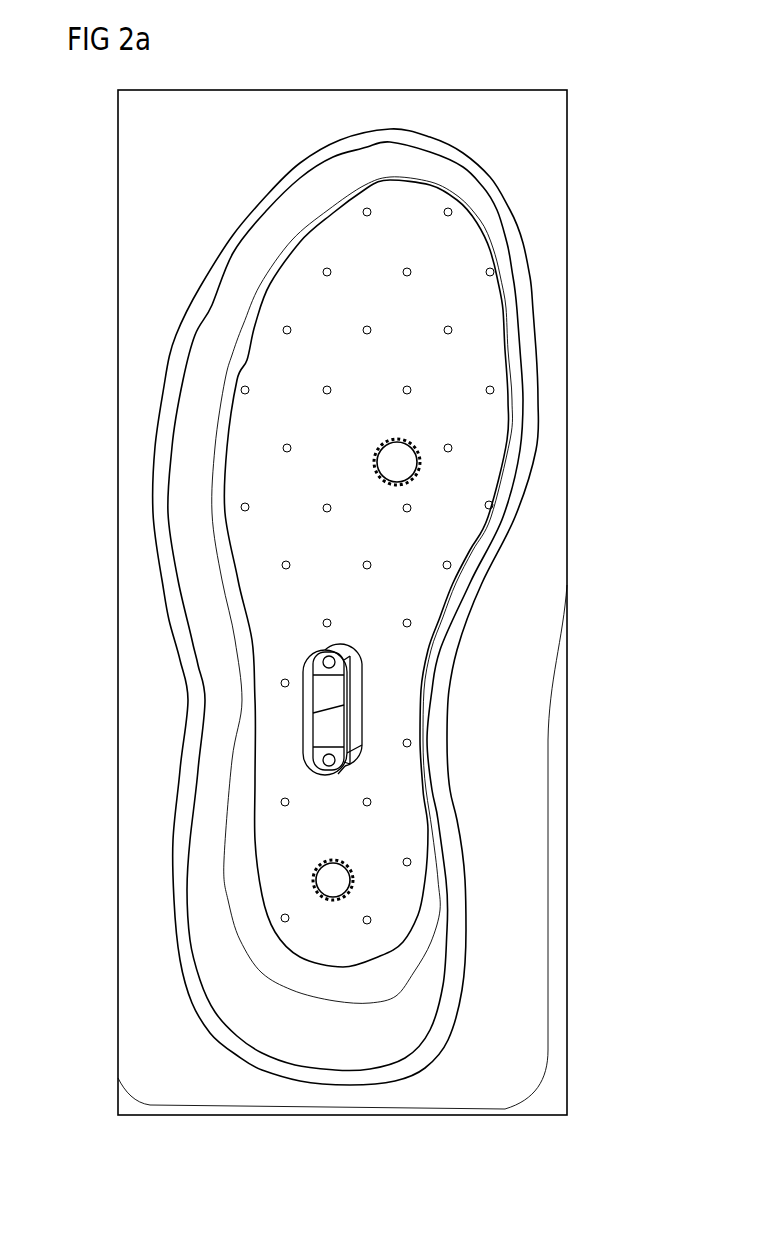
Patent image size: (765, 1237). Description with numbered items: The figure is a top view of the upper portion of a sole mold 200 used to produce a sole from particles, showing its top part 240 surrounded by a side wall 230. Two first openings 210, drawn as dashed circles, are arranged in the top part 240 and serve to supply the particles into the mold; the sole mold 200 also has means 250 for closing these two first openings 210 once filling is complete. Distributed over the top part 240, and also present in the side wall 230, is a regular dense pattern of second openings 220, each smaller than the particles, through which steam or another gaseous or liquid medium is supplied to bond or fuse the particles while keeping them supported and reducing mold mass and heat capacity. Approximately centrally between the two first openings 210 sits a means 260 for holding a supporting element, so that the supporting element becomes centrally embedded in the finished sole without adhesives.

The sole mold 200 is at (180, 193).
The first opening 210 is at (420, 458).
The second openings 220 is at (283, 329).
The side wall 230 is at (532, 372).
The top part 240 is at (443, 252).
The means for closing the first openings 250 is at (397, 466).
The means for holding a supporting element 260 is at (333, 720).